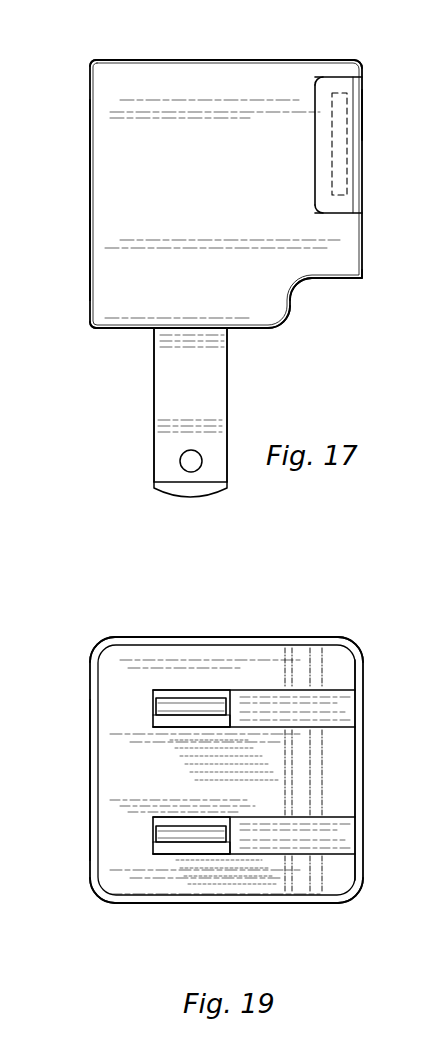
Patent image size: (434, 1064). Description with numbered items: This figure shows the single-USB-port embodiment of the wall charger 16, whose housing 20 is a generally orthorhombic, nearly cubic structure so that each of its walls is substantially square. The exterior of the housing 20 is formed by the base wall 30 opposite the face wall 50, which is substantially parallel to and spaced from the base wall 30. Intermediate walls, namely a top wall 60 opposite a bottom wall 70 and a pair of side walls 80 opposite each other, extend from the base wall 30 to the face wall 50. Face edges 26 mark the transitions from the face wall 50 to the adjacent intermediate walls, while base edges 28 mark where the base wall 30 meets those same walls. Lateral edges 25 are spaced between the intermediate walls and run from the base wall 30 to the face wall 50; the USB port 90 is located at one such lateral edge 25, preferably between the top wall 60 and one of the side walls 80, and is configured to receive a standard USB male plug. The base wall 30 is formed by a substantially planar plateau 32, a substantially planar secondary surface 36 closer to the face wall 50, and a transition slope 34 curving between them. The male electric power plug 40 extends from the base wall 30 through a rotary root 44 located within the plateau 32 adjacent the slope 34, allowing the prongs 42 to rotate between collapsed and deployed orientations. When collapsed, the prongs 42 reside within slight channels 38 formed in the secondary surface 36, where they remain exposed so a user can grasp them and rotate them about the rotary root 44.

In FIG. 17, the charger 16 is at (240, 42).
In FIG. 19, the charger 16 is at (126, 610).
In FIG. 17, the housing 20 is at (85, 165).
In FIG. 19, the housing 20 is at (75, 745).
In FIG. 17, the lateral edges 25 is at (91, 200).
In FIG. 19, the lateral edges 25 is at (102, 648).
In FIG. 17, the face edges 26 is at (92, 60).
In FIG. 17, the base edges 28 is at (90, 330).
In FIG. 17, the base wall 30 is at (247, 332).
In FIG. 19, the base wall 30 is at (140, 762).
In FIG. 17, the plateau 32 is at (138, 331).
In FIG. 19, the plateau 32 is at (232, 796).
In FIG. 17, the transition slope 34 is at (292, 307).
In FIG. 19, the transition slope 34 is at (305, 770).
In FIG. 17, the secondary surface 36 is at (325, 282).
In FIG. 19, the secondary surface 36 is at (340, 795).
In FIG. 19, the channels 38 is at (330, 708).
In FIG. 17, the male electric power plug 40 is at (136, 446).
In FIG. 19, the male electric power plug 40 is at (228, 690).
In FIG. 17, the prongs 42 is at (160, 463).
In FIG. 19, the prongs 42 is at (164, 704).
In FIG. 19, the rotary root 44 is at (160, 722).
In FIG. 17, the face wall 50 is at (188, 60).
In FIG. 17, the top wall 60 is at (362, 130).
In FIG. 19, the top wall 60 is at (364, 803).
In FIG. 17, the bottom wall 70 is at (91, 238).
In FIG. 19, the bottom wall 70 is at (90, 830).
In FIG. 17, the side walls 80 is at (208, 186).
In FIG. 19, the side walls 80 is at (200, 640).
In FIG. 17, the USB port 90 is at (338, 152).